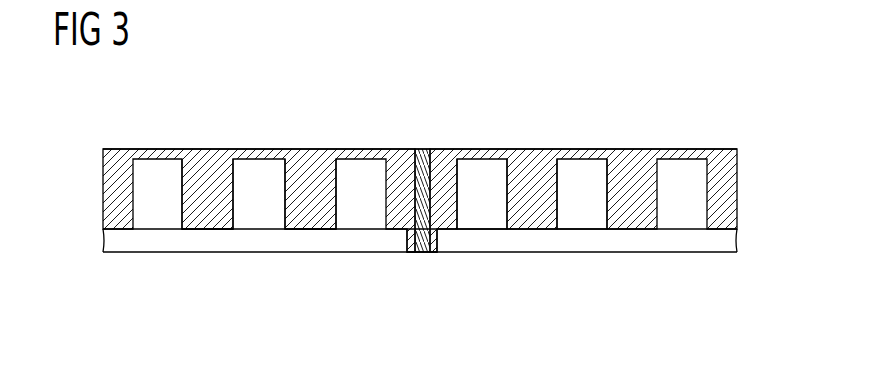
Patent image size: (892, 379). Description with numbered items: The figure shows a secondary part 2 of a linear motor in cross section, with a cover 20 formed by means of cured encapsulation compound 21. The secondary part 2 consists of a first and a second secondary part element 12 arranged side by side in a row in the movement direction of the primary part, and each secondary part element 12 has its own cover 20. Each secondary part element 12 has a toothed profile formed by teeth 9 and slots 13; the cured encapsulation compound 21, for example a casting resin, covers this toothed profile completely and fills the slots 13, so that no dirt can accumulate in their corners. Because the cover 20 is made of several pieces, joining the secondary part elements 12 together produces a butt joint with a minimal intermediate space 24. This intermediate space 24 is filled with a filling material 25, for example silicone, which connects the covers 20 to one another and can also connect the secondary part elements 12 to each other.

The secondary part 2 is at (726, 103).
The teeth 9 is at (480, 212).
The secondary part element 12 is at (152, 255).
The slots 13 is at (203, 213).
The cover 20 is at (178, 150).
The encapsulation compound 21 is at (302, 155).
The intermediate space 24 is at (421, 123).
The filling material 25 is at (422, 255).